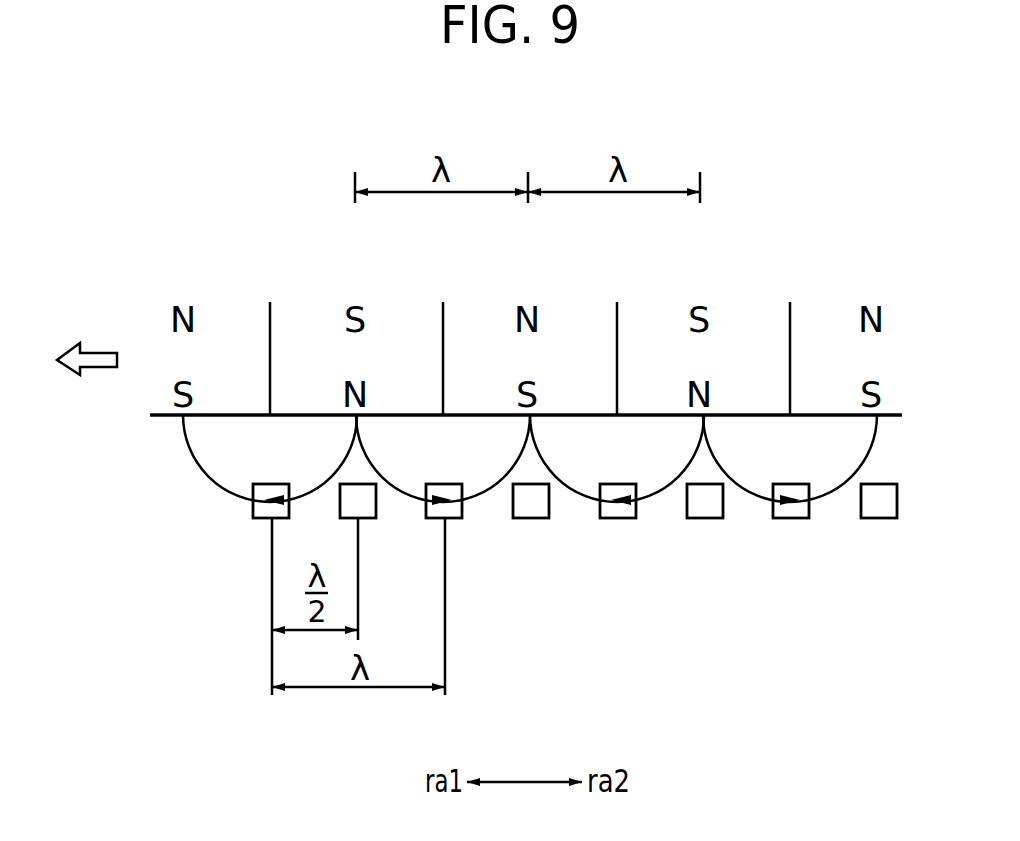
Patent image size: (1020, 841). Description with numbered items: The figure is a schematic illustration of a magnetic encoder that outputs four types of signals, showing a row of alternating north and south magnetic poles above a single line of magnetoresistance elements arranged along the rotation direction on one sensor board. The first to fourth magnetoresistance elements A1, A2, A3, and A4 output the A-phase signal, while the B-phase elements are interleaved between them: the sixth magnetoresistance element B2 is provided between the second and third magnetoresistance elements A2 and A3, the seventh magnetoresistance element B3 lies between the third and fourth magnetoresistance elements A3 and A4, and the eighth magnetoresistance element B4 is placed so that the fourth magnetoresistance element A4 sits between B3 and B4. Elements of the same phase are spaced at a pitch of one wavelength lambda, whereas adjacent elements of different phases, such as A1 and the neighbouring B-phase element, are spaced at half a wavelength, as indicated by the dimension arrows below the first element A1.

The first magnetoresistance element A1 is at (265, 519).
The sixth magnetoresistance element B2 is at (367, 519).
The second magnetoresistance element A2 is at (453, 519).
The third magnetoresistance element A3 is at (617, 519).
The seventh magnetoresistance element B3 is at (700, 519).
The fourth magnetoresistance element A4 is at (793, 519).
The eighth magnetoresistance element B4 is at (880, 519).